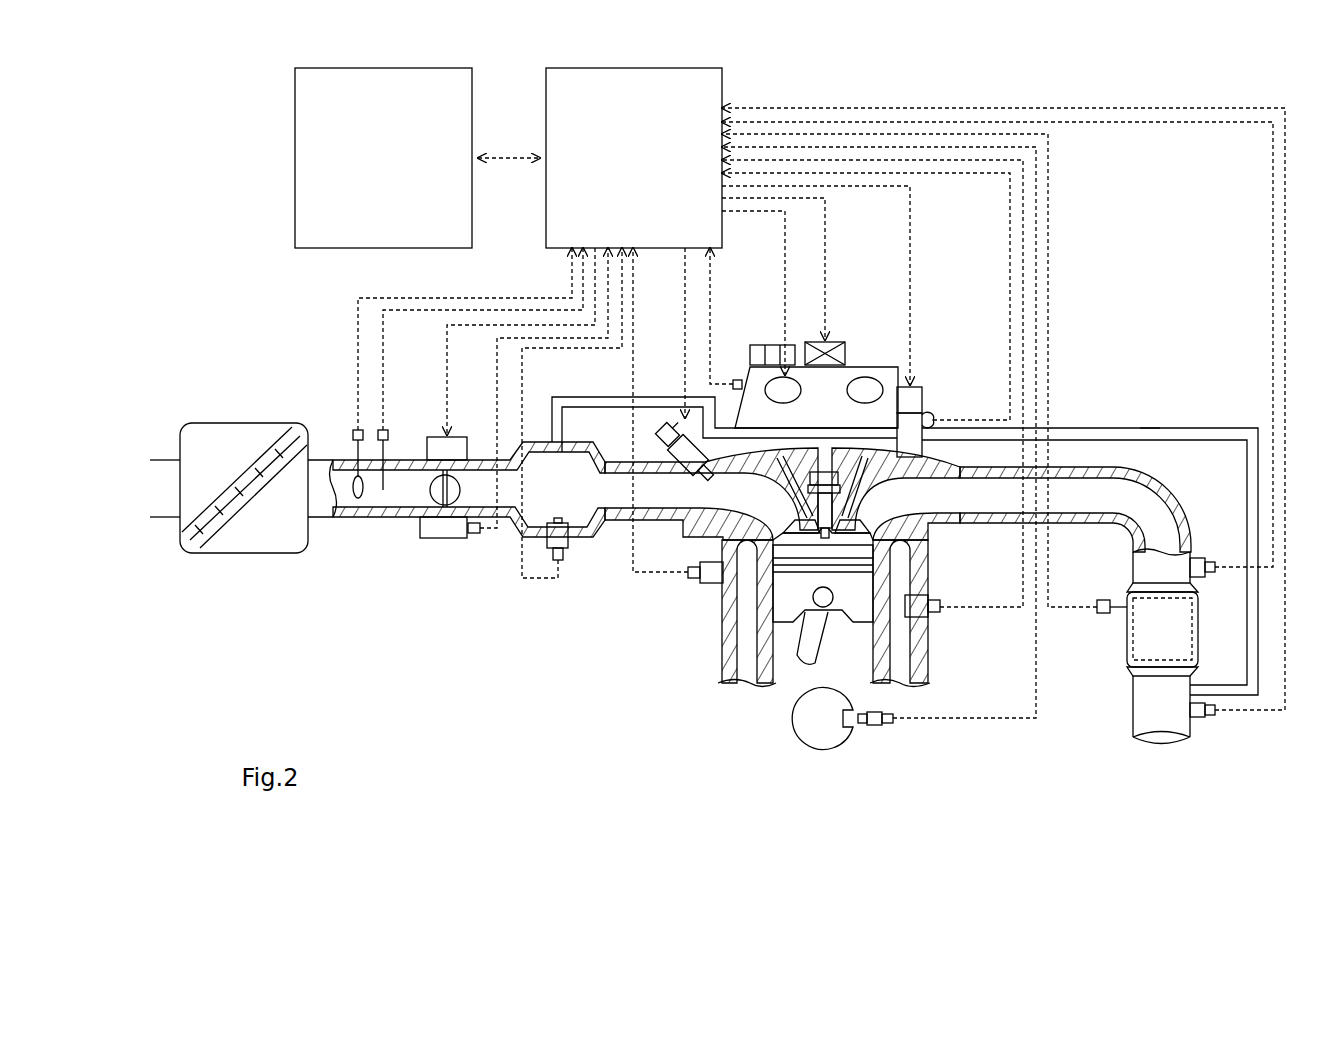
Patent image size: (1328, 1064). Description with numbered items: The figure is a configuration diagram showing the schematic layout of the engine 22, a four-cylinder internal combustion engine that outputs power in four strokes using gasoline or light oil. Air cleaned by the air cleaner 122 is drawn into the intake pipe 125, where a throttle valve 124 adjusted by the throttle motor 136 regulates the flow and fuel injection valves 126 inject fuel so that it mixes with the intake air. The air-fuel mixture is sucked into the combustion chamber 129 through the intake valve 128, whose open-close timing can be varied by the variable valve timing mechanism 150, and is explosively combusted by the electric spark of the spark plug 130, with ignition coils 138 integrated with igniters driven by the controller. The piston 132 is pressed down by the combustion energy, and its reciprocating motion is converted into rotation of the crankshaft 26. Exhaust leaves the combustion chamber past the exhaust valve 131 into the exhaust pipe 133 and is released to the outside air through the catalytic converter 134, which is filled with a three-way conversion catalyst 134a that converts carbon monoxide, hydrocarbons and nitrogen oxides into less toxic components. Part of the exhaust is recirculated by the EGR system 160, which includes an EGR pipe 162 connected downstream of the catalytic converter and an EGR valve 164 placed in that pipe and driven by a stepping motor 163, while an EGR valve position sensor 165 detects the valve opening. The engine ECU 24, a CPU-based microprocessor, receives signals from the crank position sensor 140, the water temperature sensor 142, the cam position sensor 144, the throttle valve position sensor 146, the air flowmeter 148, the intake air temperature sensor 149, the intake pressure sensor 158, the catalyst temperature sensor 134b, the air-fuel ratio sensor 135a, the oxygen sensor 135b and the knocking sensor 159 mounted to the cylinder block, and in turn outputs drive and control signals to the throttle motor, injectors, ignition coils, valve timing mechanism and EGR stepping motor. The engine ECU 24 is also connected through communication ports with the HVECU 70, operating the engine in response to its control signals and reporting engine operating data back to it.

The engine 22 is at (932, 330).
The engine electronic control unit 24 is at (634, 66).
The crankshaft 26 is at (792, 718).
The HVECU 70 is at (382, 66).
The air cleaner 122 is at (238, 423).
The throttle valve 124 is at (459, 500).
The intake pipe 125 is at (612, 522).
The fuel injection valve 126 is at (655, 415).
The intake valve 128 is at (790, 525).
The combustion chamber 129 is at (843, 540).
The spark plug 130 is at (830, 512).
The exhaust valve 131 is at (878, 507).
The piston 132 is at (790, 607).
The exhaust pipe 133 is at (1160, 490).
The catalytic converter 134 is at (1127, 655).
The conversion catalyst 134a is at (1143, 630).
The temperature sensor 134b is at (1102, 600).
The air-fuel ratio sensor 135a is at (1197, 558).
The oxygen sensor 135b is at (1198, 717).
The throttle motor 136 is at (455, 436).
The ignition coil 138 is at (828, 340).
The crank position sensor 140 is at (870, 727).
The water temperature sensor 142 is at (937, 595).
The cam position sensor 144 is at (738, 378).
The throttle valve position sensor 146 is at (445, 540).
The air flowmeter 148 is at (352, 430).
The temperature sensor 149 is at (389, 430).
The variable valve timing mechanism 150 is at (860, 367).
The intake pressure sensor 158 is at (565, 550).
The knocking sensor 159 is at (685, 583).
The EGR system 160 is at (1152, 380).
The EGR pipe 162 is at (1120, 428).
The stepping motor 163 is at (920, 385).
The EGR valve 164 is at (925, 448).
The EGR valve position sensor 165 is at (935, 418).